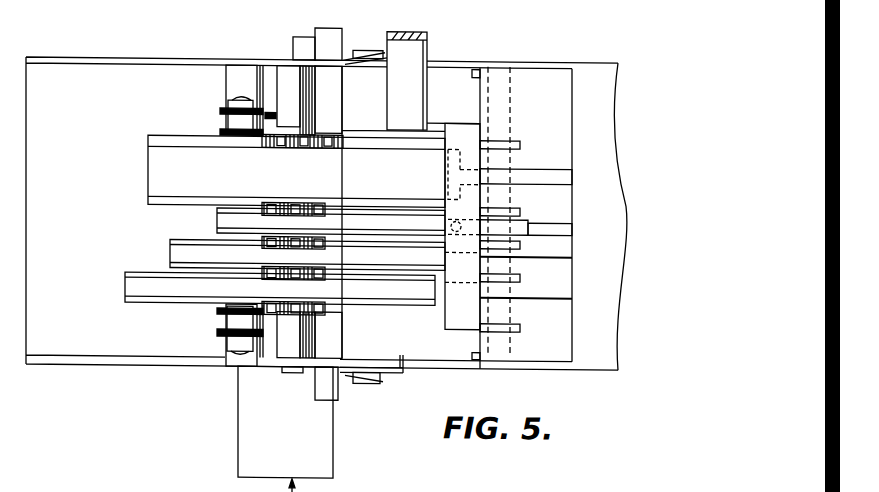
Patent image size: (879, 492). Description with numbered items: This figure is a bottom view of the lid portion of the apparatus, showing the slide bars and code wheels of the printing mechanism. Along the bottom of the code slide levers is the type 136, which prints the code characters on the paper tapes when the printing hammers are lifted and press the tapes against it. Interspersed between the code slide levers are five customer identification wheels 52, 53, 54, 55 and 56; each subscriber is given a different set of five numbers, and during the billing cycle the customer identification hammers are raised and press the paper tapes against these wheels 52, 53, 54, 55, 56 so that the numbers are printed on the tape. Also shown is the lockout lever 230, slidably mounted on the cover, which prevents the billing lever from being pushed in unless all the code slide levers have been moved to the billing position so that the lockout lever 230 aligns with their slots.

The type 136 is at (218, 152).
The customer identification wheel 52 is at (325, 135).
The customer identification wheel 53 is at (217, 213).
The customer identification wheel 54 is at (217, 231).
The customer identification wheel 55 is at (326, 272).
The customer identification wheel 56 is at (325, 311).
The lockout lever 230 is at (253, 401).